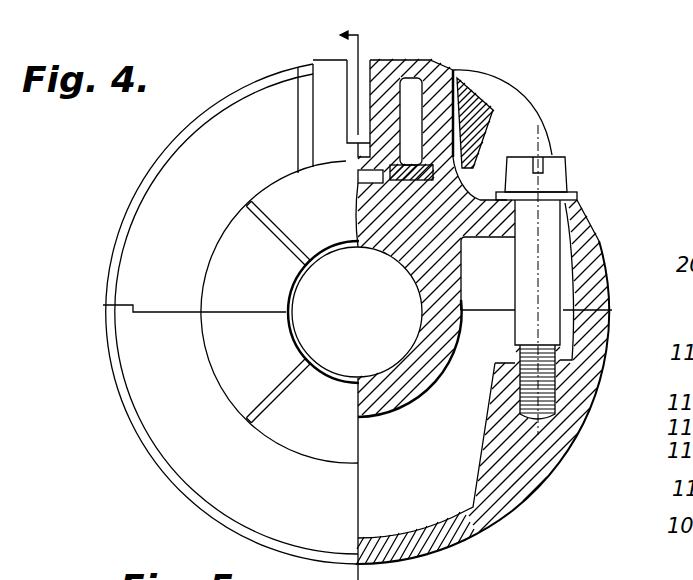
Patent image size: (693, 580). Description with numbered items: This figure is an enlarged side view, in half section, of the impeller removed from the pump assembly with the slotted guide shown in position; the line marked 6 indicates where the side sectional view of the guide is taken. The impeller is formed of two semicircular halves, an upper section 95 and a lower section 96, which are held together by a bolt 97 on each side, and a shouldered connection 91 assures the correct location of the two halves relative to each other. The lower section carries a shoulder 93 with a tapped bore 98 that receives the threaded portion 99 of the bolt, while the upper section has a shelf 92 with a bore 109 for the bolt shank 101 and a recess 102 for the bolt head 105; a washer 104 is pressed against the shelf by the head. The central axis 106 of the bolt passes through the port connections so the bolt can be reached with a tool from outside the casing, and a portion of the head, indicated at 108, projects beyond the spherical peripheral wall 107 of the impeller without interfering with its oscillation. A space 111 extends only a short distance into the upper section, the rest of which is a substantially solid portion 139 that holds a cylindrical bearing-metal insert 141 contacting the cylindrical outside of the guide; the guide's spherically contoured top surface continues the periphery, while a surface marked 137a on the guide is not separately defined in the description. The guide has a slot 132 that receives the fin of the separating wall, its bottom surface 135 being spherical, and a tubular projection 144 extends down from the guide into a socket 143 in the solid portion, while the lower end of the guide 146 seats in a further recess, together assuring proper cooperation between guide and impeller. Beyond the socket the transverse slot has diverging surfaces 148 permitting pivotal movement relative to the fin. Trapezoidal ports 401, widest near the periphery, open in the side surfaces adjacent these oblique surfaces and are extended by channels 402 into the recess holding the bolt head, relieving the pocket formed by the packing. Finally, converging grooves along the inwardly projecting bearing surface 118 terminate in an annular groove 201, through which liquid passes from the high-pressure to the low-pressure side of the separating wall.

The section line 6— 6 is at (361, 82).
The shouldered connection 91 is at (132, 312).
The shelf 92 is at (510, 240).
The shoulder 93 is at (498, 382).
The upper semicircular section 95 is at (132, 278).
The lower semicircular section 96 is at (180, 448).
The bolt 97 is at (542, 290).
The tapped bore 98 is at (553, 387).
The threaded portion 99 is at (530, 403).
The shank 101 is at (543, 227).
The recess 102 is at (507, 133).
The washer 104 is at (577, 195).
The head 105 is at (557, 177).
The central axis 106 is at (597, 237).
The peripheral wall 107 is at (605, 283).
The head extension 108 is at (563, 158).
The bore 109 is at (484, 290).
The space 111 is at (428, 510).
The inwardly projecting bearing surface 118 is at (328, 447).
The slot 132 is at (373, 87).
The bottom surface 135 is at (345, 162).
The slot 137a is at (330, 57).
The solid portion 139 is at (400, 243).
The cylindrical insert 141 is at (462, 78).
The socket 143 is at (357, 247).
The tubular projection 144 is at (357, 207).
The guide 146 is at (323, 157).
The diverging surfaces 148 is at (302, 100).
The annular groove 201 is at (263, 210).
The ports 401 is at (483, 155).
The channels 402 is at (466, 112).